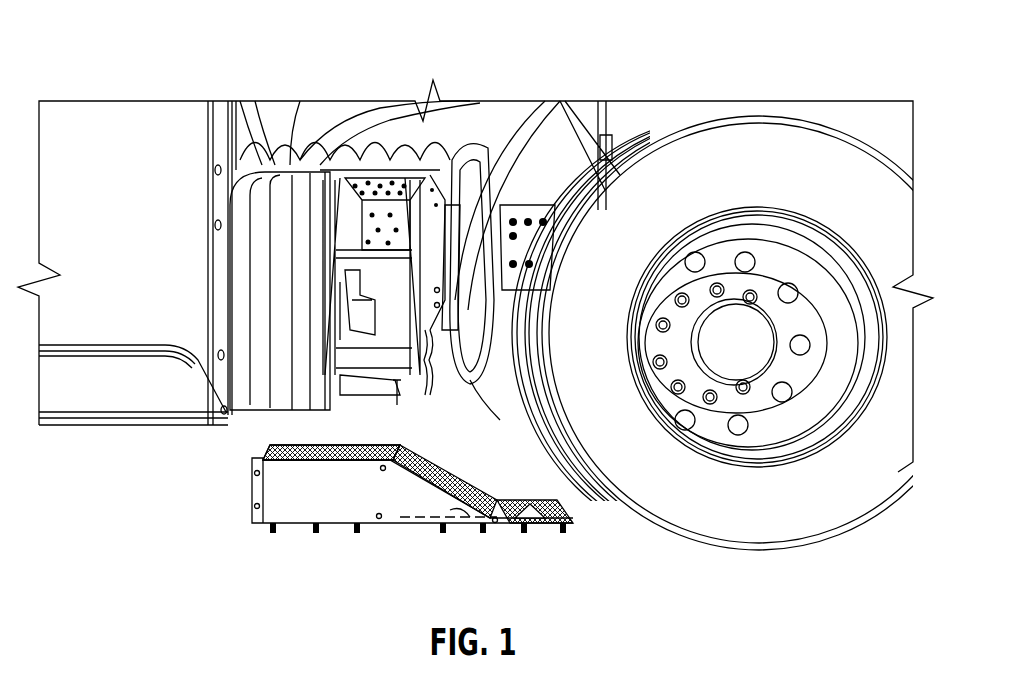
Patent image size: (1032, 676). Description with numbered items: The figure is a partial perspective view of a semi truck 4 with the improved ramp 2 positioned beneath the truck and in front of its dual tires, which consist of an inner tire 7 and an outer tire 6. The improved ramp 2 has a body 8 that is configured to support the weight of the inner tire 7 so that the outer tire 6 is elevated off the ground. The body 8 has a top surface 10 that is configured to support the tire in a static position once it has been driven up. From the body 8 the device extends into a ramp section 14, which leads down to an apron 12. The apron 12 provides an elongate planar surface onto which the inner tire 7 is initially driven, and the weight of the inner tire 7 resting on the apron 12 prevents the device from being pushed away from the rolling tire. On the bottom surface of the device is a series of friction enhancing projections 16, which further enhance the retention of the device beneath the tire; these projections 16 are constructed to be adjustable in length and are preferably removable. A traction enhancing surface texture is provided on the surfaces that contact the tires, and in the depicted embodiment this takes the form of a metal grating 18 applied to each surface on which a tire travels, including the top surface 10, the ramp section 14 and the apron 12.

The improved ramp 2 is at (394, 516).
The semi truck 4 is at (163, 140).
The outer tire 6 is at (755, 165).
The inner tire 7 is at (535, 290).
The body 8 is at (288, 512).
The top surface 10 is at (263, 450).
The apron 12 is at (575, 524).
The ramp section 14 is at (442, 465).
The friction enhancing projections 16 is at (316, 530).
The metal grating 18 is at (320, 447).